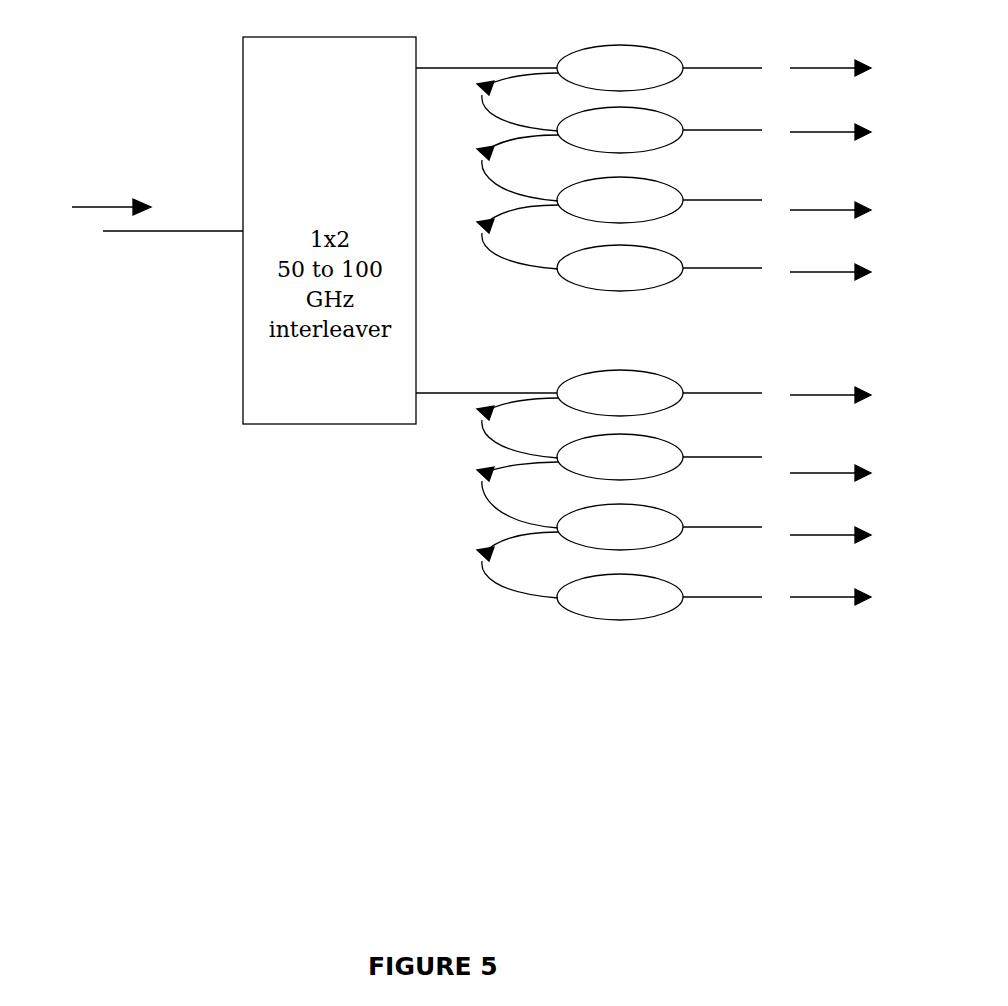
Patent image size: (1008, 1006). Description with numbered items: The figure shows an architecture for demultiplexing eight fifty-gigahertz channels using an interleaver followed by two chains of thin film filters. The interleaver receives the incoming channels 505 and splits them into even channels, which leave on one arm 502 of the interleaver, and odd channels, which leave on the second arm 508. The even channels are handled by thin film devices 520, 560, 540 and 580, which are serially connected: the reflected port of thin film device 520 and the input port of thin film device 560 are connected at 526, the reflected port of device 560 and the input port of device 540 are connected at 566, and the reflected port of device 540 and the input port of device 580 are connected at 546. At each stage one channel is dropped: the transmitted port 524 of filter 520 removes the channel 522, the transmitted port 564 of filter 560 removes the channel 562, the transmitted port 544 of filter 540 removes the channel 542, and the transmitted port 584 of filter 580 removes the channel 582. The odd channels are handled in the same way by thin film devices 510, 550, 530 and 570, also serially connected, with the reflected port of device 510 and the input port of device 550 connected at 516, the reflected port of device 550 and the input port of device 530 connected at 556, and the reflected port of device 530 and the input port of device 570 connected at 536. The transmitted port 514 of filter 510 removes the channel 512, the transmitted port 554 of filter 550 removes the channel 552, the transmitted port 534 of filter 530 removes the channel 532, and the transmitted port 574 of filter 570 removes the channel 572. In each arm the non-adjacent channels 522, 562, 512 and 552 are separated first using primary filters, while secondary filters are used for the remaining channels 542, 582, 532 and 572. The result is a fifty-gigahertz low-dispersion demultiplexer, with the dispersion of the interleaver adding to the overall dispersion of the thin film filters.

The channels 505 is at (130, 163).
The first interleaver output port 502 is at (447, 65).
The second interleaver output port 508 is at (447, 390).
The thin film filter 520 is at (670, 47).
The transmitted port 524 is at (707, 68).
The channel 522 is at (838, 45).
The connection 526 is at (478, 97).
The thin film filter 560 is at (670, 109).
The transmitted port 564 is at (707, 130).
The channel 562 is at (838, 109).
The connection 566 is at (478, 162).
The thin film filter 540 is at (670, 179).
The transmitted port 544 is at (707, 200).
The channel 542 is at (838, 187).
The connection 546 is at (478, 235).
The thin film filter 580 is at (670, 247).
The transmitted port 584 is at (707, 268).
The channel 582 is at (838, 249).
The thin film filter 510 is at (670, 372).
The transmitted port 514 is at (707, 393).
The channel 512 is at (838, 372).
The connection 516 is at (478, 422).
The thin film filter 550 is at (670, 436).
The transmitted port 554 is at (707, 457).
The channel 552 is at (838, 450).
The connection 556 is at (478, 483).
The thin film filter 530 is at (670, 506).
The transmitted port 534 is at (707, 527).
The channel 532 is at (838, 512).
The connection 536 is at (478, 563).
The thin film filter 570 is at (670, 576).
The transmitted port 574 is at (707, 597).
The channel 572 is at (838, 574).